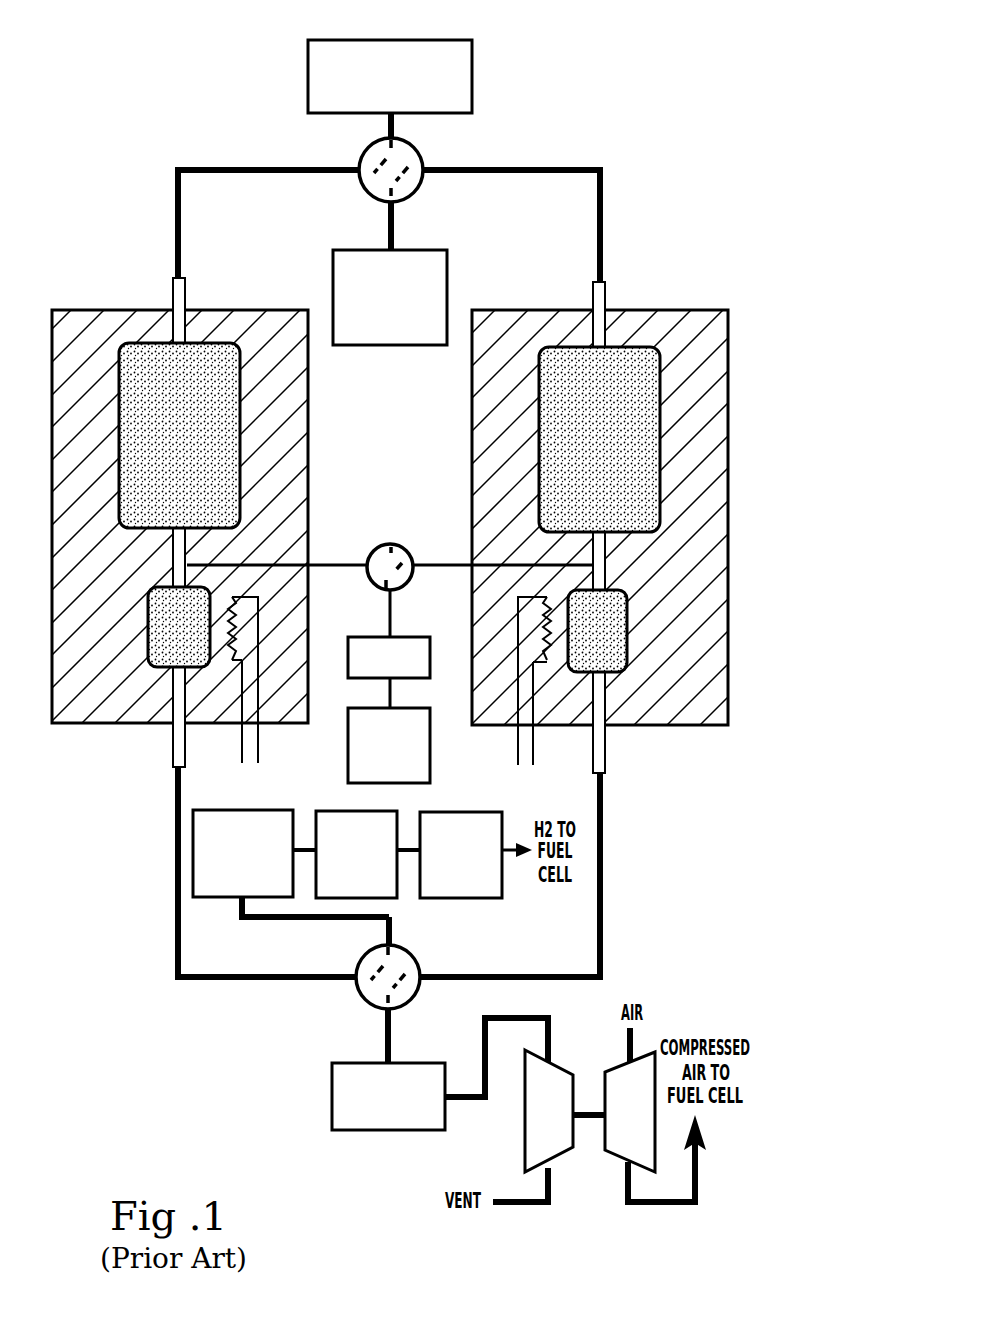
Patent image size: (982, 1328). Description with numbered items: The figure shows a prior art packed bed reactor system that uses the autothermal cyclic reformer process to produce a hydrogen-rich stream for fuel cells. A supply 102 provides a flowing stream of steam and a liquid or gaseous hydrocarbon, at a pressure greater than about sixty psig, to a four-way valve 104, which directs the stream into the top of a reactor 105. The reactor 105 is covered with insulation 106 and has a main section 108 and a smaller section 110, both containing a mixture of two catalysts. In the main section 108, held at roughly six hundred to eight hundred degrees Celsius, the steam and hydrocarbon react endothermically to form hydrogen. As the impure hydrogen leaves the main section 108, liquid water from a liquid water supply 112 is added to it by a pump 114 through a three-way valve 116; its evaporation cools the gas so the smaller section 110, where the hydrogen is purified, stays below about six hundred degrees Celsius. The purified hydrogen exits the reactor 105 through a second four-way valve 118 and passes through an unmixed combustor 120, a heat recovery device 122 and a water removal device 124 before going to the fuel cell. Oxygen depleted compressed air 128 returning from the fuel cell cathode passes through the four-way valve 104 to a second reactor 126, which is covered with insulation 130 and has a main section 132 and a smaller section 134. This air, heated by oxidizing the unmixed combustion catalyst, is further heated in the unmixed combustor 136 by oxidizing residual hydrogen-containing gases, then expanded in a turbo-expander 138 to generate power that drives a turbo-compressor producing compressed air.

The supply 102 is at (345, 260).
The four-way valve 104 is at (421, 190).
The reactor 105 is at (596, 296).
The insulation 106 is at (486, 380).
The main section 108 is at (579, 447).
The smaller section 110 is at (581, 641).
The liquid water supply 112 is at (424, 752).
The pump 114 is at (362, 645).
The three-way valve 116 is at (392, 550).
The second four-way valve 118 is at (362, 997).
The unmixed combustor 120 is at (232, 884).
The heat recovery device 122 is at (388, 890).
The water removal device 124 is at (485, 893).
The second reactor 126 is at (183, 293).
The oxygen depleted compressed air 128 is at (462, 60).
The insulation 130 is at (296, 389).
The main section 132 is at (165, 441).
The smaller section 134 is at (161, 639).
The unmixed combustor 136 is at (335, 1077).
The turbo-expander 138 is at (528, 1143).